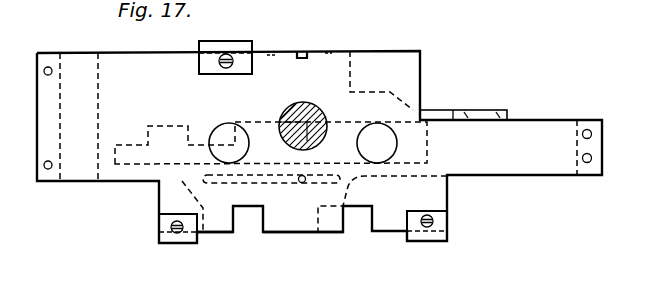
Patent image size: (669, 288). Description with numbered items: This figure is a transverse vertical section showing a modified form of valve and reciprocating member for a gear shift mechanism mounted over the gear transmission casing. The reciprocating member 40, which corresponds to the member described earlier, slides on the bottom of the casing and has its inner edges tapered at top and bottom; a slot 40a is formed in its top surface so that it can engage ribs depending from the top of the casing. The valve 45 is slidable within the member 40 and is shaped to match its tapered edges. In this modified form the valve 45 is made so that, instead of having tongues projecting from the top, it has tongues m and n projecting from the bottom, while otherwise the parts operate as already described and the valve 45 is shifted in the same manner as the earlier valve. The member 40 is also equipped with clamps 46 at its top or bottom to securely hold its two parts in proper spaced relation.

The member 40 is at (126, 67).
The slot 40a is at (303, 51).
The valve 45 is at (438, 118).
The clamps 46 is at (200, 44).
The tongue m is at (220, 223).
The tongue n is at (308, 224).